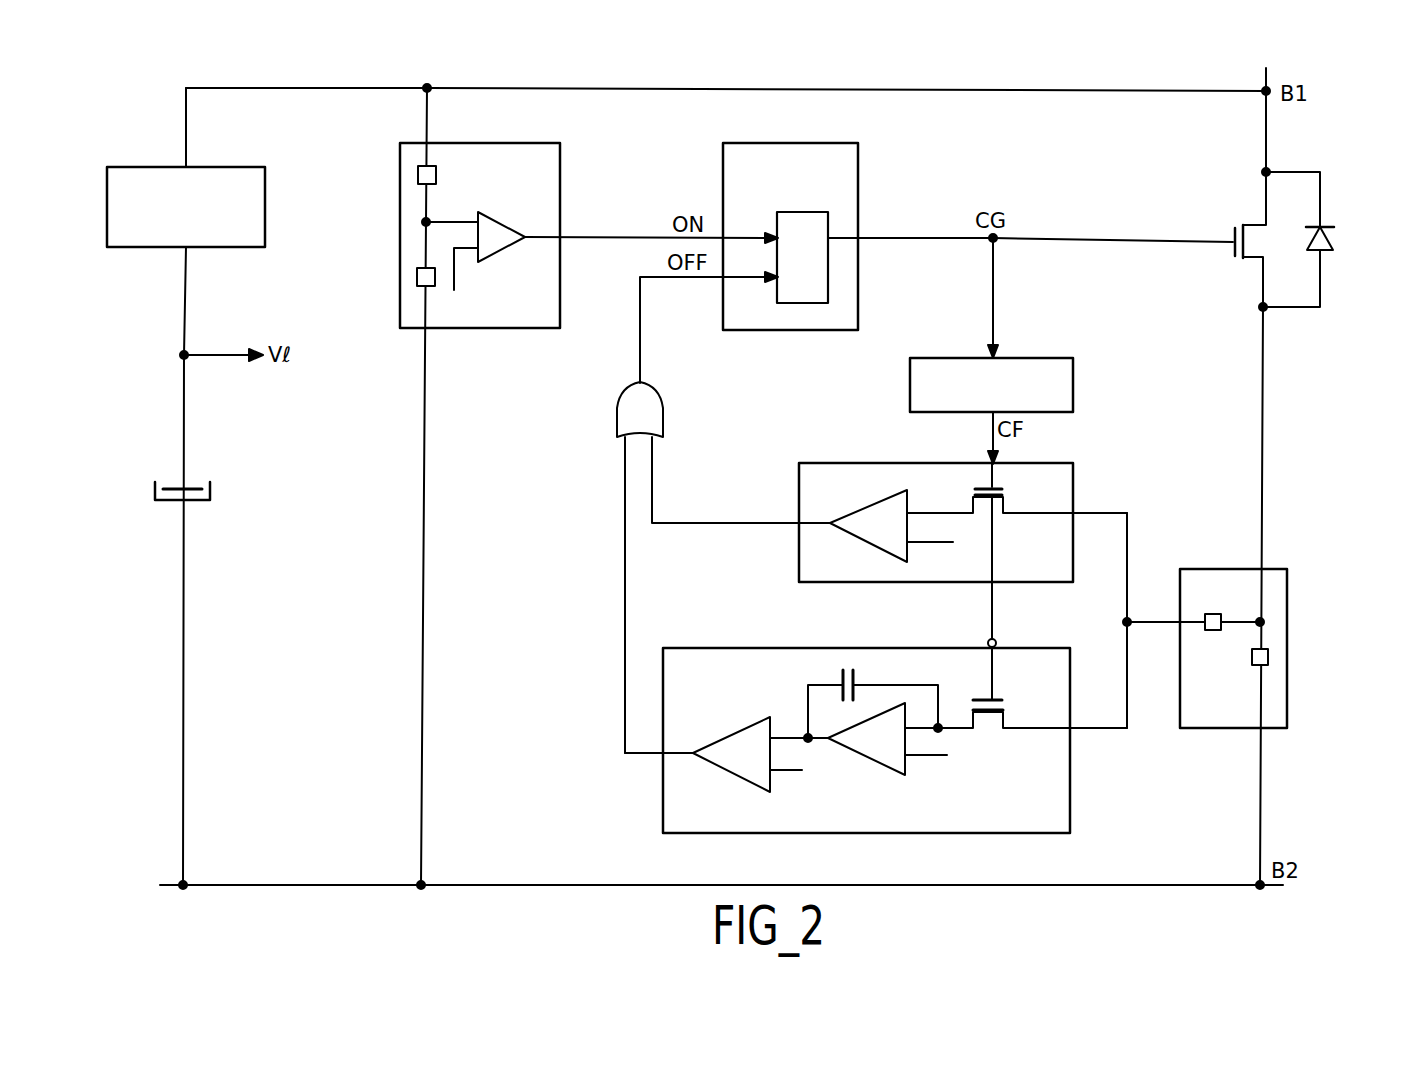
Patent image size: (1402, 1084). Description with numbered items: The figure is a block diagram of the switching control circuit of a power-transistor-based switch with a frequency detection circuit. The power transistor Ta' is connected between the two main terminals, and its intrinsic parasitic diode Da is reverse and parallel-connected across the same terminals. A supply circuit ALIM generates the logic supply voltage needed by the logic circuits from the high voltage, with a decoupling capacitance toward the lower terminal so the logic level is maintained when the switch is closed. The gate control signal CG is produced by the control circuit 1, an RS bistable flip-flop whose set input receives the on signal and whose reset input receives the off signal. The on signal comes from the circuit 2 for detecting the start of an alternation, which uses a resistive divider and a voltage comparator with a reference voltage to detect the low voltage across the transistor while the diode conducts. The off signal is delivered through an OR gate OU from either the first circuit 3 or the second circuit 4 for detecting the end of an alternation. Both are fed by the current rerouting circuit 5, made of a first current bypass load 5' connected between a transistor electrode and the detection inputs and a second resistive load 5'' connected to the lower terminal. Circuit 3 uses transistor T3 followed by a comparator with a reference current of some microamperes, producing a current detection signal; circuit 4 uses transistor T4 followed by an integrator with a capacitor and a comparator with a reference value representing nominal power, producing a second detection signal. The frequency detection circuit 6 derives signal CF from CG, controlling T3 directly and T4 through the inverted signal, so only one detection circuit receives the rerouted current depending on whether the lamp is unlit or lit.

The control circuit 1 is at (846, 143).
The circuit for detecting the start of an alternation 2 is at (560, 162).
The first circuit for detecting the end of an alternation 3 is at (946, 533).
The second circuit for detecting the end of an alternation 4 is at (876, 723).
The circuit for rerouting the current flowing in the transistor 5 is at (1252, 635).
The first current bypass load 5' is at (1222, 607).
The second resistive load 5'' is at (1231, 666).
The frequency detection circuit 6 is at (909, 379).
The transistor T3 is at (1005, 497).
The transistor T4 is at (1003, 701).
The power transistor Ta' is at (1223, 239).
The diode Da is at (1333, 236).
The logic supply voltage generation circuit ALIM is at (265, 208).
The OR gate OU is at (723, 567).